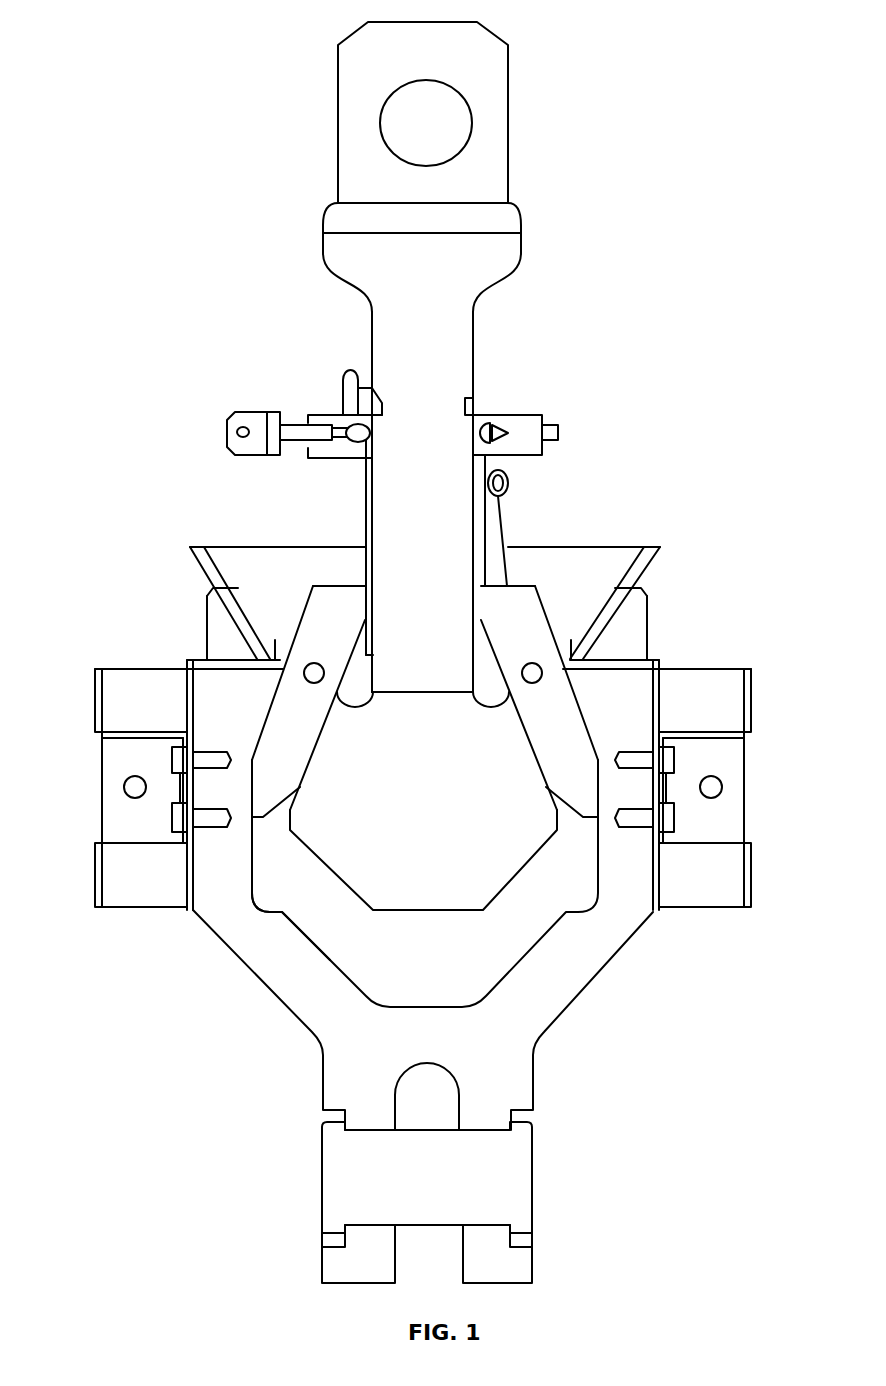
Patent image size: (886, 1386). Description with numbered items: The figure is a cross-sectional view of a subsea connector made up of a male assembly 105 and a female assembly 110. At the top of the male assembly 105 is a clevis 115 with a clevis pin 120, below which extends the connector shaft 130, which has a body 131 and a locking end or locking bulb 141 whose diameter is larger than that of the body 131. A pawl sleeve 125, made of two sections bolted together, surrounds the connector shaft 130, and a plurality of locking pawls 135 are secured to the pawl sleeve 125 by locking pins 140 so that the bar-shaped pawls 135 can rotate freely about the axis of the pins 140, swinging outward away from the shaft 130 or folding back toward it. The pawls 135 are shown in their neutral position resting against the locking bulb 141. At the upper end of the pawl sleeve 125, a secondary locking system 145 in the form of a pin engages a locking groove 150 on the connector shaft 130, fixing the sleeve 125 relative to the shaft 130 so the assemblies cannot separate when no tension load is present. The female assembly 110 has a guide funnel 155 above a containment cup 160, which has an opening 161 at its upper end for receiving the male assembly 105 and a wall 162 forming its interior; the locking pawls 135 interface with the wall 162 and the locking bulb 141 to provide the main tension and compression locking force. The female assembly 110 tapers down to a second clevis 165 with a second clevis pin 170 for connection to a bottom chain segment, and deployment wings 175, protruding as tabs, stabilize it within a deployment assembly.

The male assembly 105 is at (483, 263).
The female assembly 110 is at (492, 972).
The clevis 115 is at (485, 107).
The clevis pin 120 is at (380, 132).
The pawl sleeve 125 is at (490, 538).
The connector shaft 130 is at (457, 360).
The body 131 is at (430, 530).
The locking pawls 135 is at (333, 610).
The locking pins 140 is at (538, 677).
The locking bulb 141 is at (475, 845).
The secondary locking system 145 is at (222, 422).
The locking groove 150 is at (543, 390).
The guide funnel 155 is at (188, 548).
The containment cup 160 is at (338, 943).
The opening 161 is at (280, 628).
The wall 162 is at (250, 892).
The second clevis 165 is at (490, 1257).
The second clevis pin 170 is at (340, 1173).
The deployment wings 175 is at (150, 708).